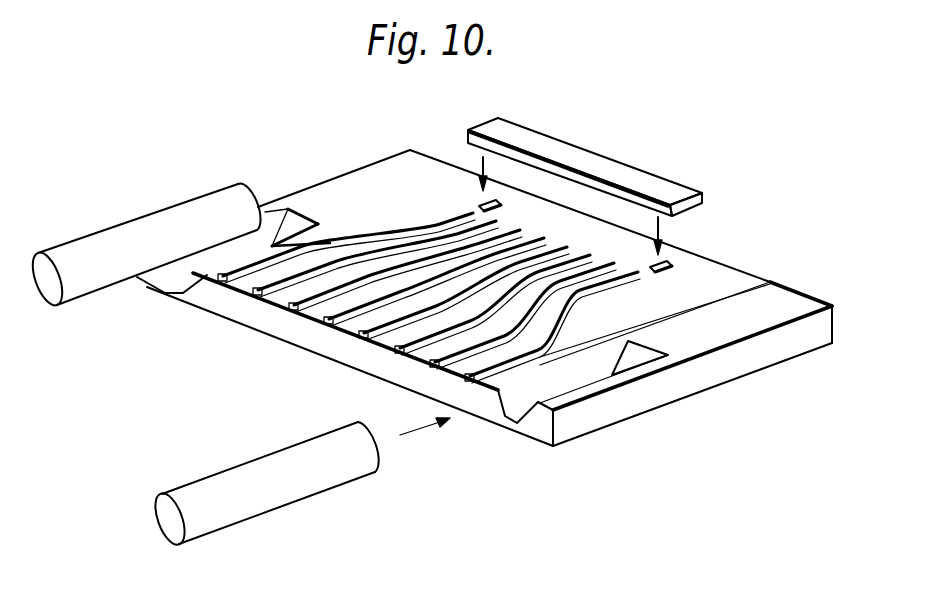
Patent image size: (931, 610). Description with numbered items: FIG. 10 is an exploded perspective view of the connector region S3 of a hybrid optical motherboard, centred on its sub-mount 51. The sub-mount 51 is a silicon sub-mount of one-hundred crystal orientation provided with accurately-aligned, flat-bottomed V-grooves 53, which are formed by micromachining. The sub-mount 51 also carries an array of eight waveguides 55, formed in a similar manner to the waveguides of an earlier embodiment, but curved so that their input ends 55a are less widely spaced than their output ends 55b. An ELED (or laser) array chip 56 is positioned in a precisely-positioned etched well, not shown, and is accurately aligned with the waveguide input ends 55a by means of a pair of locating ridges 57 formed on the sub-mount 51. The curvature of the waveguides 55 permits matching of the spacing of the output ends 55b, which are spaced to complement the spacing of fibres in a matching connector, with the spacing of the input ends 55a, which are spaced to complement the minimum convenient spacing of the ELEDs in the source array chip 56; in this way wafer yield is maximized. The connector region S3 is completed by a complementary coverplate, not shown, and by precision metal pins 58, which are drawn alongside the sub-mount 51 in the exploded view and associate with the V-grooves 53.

The sub-mount 51 is at (800, 340).
The V-grooves 53 is at (163, 273).
The waveguides 55 is at (377, 242).
The input ends 55a is at (643, 273).
The output ends 55b is at (362, 333).
The ELED array chip 56 is at (587, 160).
The locating ridges 57 is at (481, 203).
The precision metal pins 58 is at (70, 253).
The connector region S3 is at (505, 298).